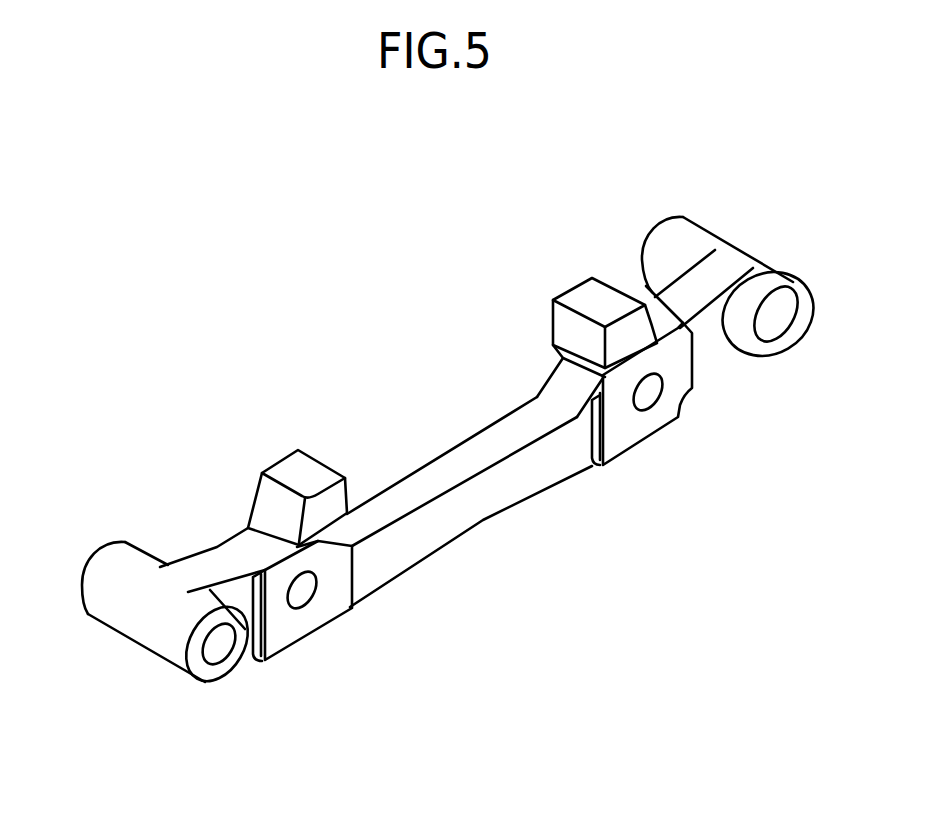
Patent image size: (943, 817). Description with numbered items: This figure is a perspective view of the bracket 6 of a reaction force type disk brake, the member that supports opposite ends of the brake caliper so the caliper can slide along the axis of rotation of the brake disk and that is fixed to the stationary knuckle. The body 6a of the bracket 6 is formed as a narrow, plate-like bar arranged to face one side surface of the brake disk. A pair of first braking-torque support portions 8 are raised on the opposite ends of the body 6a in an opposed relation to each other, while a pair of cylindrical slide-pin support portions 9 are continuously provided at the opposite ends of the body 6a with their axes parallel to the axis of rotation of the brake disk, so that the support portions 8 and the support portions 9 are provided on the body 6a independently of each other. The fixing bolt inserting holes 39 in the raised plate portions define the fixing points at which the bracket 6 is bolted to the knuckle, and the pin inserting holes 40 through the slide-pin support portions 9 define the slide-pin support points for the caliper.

The bracket 6 is at (490, 521).
The body 6a is at (422, 480).
The first braking-torque support portions 8 is at (290, 467).
The cylindrical slide-pin support portions 9 is at (108, 610).
The fixing bolt inserting holes 39 is at (295, 602).
The pin inserting holes 40 is at (205, 655).